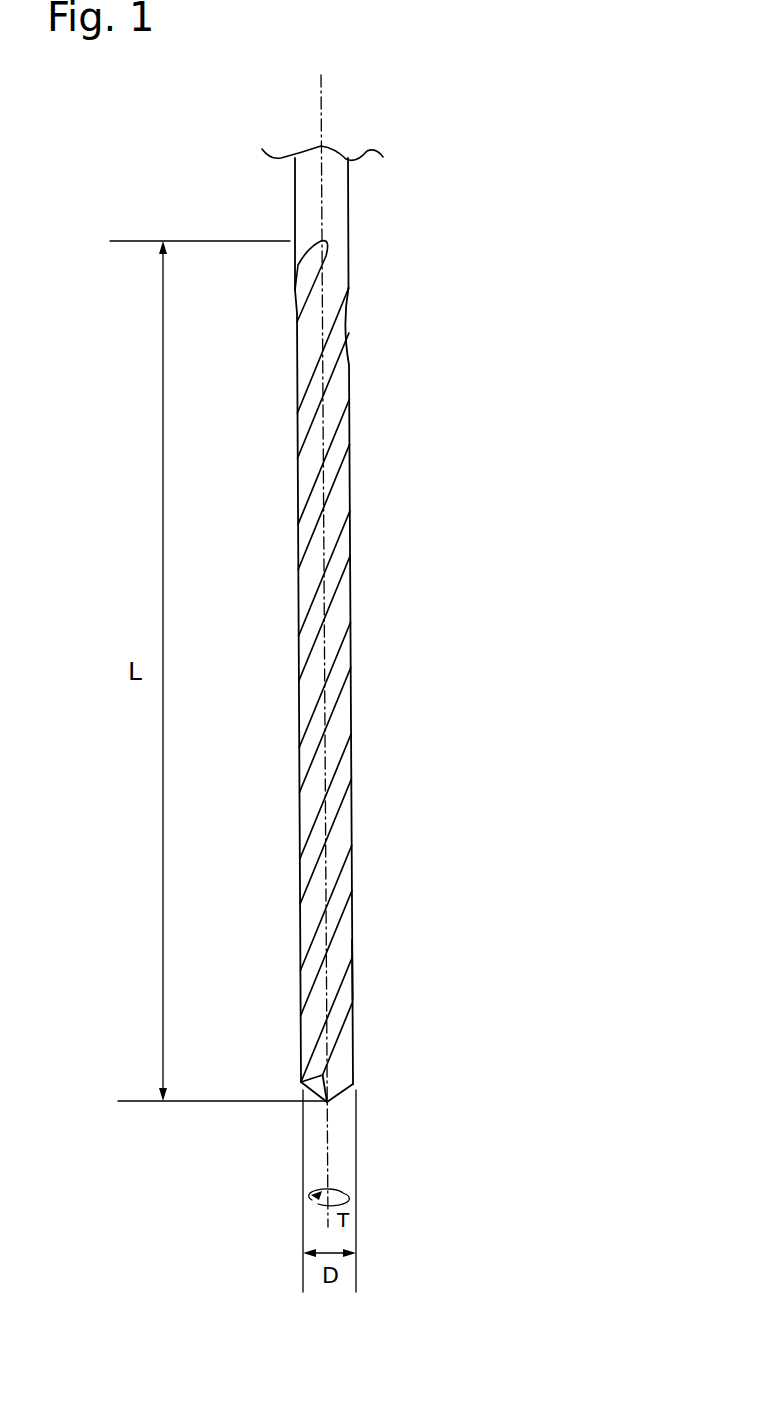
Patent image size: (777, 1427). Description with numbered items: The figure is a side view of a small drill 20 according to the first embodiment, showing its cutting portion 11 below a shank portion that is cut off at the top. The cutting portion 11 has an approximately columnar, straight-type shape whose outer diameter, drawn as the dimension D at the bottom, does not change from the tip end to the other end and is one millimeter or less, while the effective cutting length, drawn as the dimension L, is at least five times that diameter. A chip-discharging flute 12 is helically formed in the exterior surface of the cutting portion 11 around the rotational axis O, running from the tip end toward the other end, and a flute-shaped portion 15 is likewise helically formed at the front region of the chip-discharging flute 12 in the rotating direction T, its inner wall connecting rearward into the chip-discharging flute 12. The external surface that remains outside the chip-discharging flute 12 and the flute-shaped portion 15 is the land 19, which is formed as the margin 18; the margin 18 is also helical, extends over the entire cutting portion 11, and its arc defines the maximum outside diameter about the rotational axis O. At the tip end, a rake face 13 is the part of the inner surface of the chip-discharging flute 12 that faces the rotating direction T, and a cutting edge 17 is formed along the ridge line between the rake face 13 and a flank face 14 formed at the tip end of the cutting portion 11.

The small drill 20 is at (518, 317).
The cutting portion 11 is at (362, 464).
The chip-discharging flute 12 is at (337, 853).
The land 19 is at (342, 929).
The margin 18 is at (338, 953).
The flute-shaped portion 15 is at (333, 1017).
The rake face 13 is at (338, 1072).
The cutting edge 17 is at (340, 1095).
The flank face 14 is at (302, 1092).
The rotational axis O is at (347, 1150).